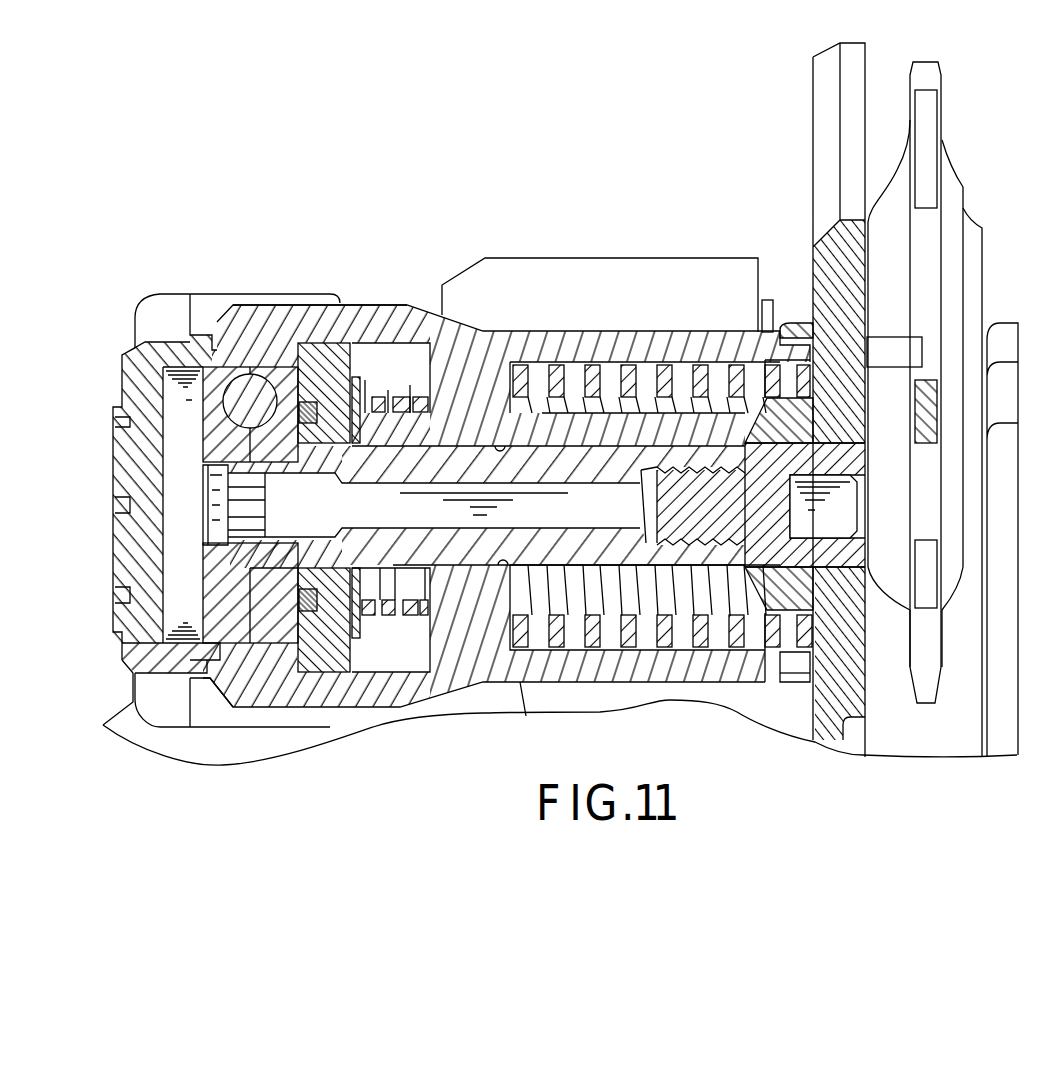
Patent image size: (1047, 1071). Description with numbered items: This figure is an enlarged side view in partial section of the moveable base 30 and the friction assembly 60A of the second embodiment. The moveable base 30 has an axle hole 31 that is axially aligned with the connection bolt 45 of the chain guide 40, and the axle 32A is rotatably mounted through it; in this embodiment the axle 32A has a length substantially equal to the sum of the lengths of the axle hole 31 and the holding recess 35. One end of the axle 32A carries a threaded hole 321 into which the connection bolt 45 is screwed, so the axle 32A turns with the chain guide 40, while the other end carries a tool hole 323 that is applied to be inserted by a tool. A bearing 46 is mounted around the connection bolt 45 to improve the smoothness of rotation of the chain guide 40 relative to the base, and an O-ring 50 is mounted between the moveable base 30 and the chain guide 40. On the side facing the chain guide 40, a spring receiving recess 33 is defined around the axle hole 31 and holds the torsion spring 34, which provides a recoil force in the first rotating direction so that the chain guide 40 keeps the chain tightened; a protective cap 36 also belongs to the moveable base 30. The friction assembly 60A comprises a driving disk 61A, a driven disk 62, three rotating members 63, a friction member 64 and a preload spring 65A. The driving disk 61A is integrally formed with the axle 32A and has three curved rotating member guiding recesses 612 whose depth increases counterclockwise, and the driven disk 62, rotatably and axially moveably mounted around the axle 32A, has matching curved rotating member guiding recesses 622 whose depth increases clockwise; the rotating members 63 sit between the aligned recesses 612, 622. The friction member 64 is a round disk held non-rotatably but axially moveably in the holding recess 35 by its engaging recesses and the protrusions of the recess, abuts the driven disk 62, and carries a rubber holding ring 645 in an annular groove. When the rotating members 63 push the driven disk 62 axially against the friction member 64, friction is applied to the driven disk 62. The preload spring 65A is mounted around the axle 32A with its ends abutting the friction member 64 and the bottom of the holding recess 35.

The moveable base 30 is at (548, 240).
The axle hole 31 is at (422, 555).
The axle 32A is at (193, 533).
The threaded hole 321 is at (667, 490).
The tool hole 323 is at (257, 477).
The spring receiving recess 33 is at (572, 645).
The torsion spring 34 is at (807, 637).
The holding recess 35 is at (413, 353).
The protective cap 36 is at (132, 373).
The chain guide 40 is at (805, 130).
The connection bolt 45 is at (833, 555).
The bearing 46 is at (800, 418).
The O-ring 50 is at (800, 312).
The friction assembly 60A is at (193, 400).
The driving disk 61A is at (212, 623).
The rotating member guiding recess 612 is at (355, 364).
The driven disk 62 is at (265, 625).
The rotating member guiding recess 622 is at (355, 363).
The rotating member 63 is at (248, 393).
The friction member 64 is at (320, 658).
The rubber holding ring 645 is at (300, 605).
The preload spring 65A is at (362, 615).